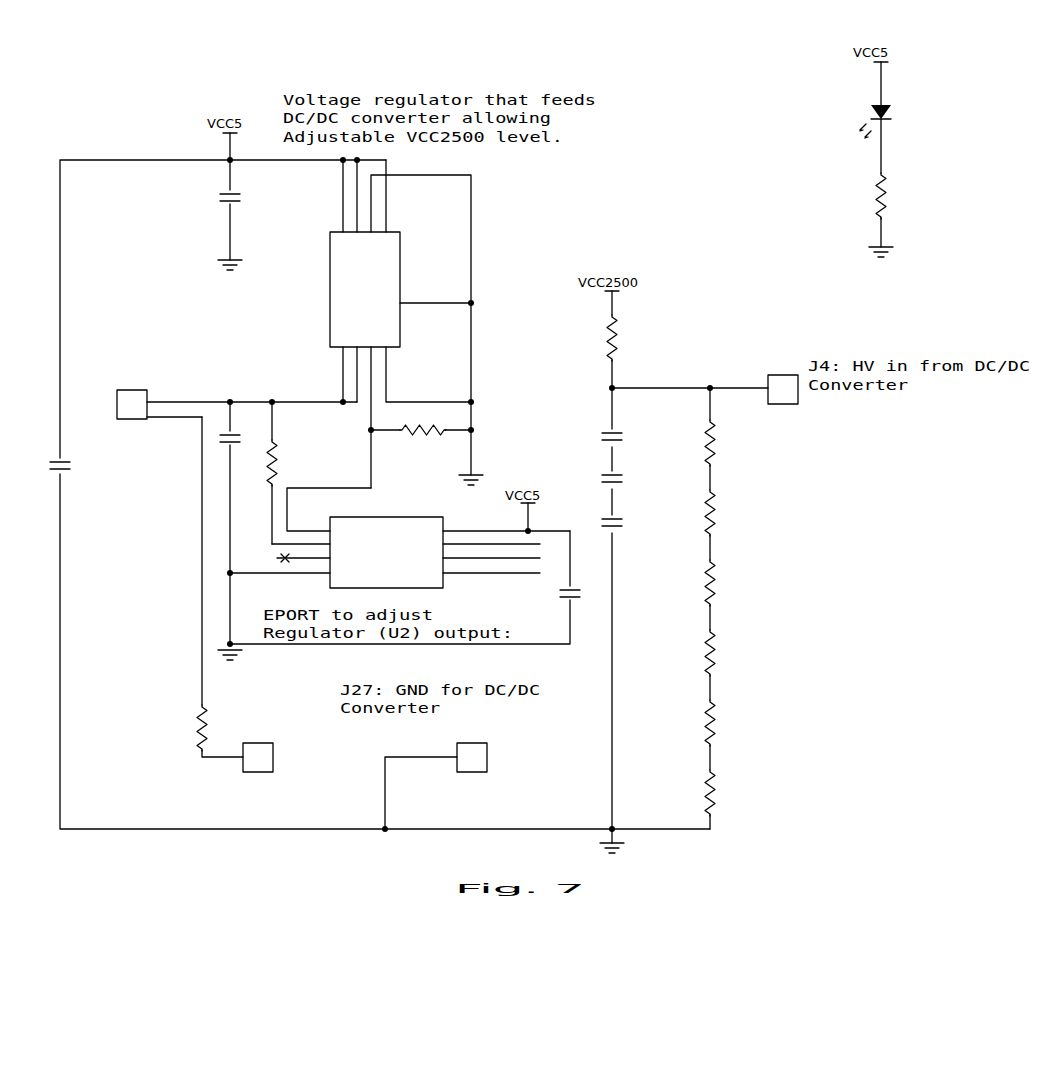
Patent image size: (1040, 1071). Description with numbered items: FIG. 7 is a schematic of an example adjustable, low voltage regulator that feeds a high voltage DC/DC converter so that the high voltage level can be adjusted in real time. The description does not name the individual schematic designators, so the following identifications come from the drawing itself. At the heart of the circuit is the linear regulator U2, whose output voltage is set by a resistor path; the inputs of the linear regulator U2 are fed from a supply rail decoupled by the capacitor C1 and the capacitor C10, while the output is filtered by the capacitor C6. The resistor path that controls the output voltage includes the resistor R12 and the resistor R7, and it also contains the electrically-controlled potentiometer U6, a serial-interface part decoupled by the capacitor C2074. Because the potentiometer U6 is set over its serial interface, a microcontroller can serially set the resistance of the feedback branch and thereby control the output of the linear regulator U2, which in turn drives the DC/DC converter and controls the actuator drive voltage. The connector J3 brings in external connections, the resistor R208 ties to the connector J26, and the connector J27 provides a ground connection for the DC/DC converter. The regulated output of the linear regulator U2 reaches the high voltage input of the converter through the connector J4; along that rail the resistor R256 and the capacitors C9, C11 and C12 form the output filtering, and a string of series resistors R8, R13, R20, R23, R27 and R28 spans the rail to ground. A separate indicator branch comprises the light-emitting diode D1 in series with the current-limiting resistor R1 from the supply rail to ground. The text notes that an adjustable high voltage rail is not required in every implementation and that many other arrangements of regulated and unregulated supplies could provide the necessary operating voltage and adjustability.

The capacitor 1.0u SM/C_0805 C1 is at (216, 215).
The voltage regulator MAX1792 U2 is at (442, 324).
The resistor 84k R7 is at (424, 433).
The connector CON2 J3 is at (234, 413).
The capacitor 3.3u C10 is at (99, 494).
The capacitor 3.3u C6 is at (268, 529).
The resistor 100k R12 is at (308, 471).
The digital potentiometer MAX5401 U6 is at (400, 544).
The capacitor 1.0u C2074 is at (413, 587).
The resistor 1.1 R208 is at (170, 587).
The connector CON1 J26 is at (250, 759).
The connector CON1 GND for DC/DC converter J27 is at (437, 773).
The resistor SM/R_1206 R256 is at (650, 572).
The connector CON1 HV in from DC/DC converter J4 is at (774, 385).
The capacitor 0.047u C9 is at (650, 452).
The capacitor 0.047u C11 is at (650, 495).
The capacitor 0.047u C12 is at (650, 539).
The resistor 22M R8 is at (749, 439).
The resistor 22M R13 is at (749, 509).
The resistor 22M R20 is at (749, 579).
The resistor 22M R23 is at (749, 649).
The resistor 22M R27 is at (749, 719).
The resistor 22M R28 is at (749, 789).
The LED D1 is at (926, 117).
The resistor 1.2k R1 is at (919, 214).